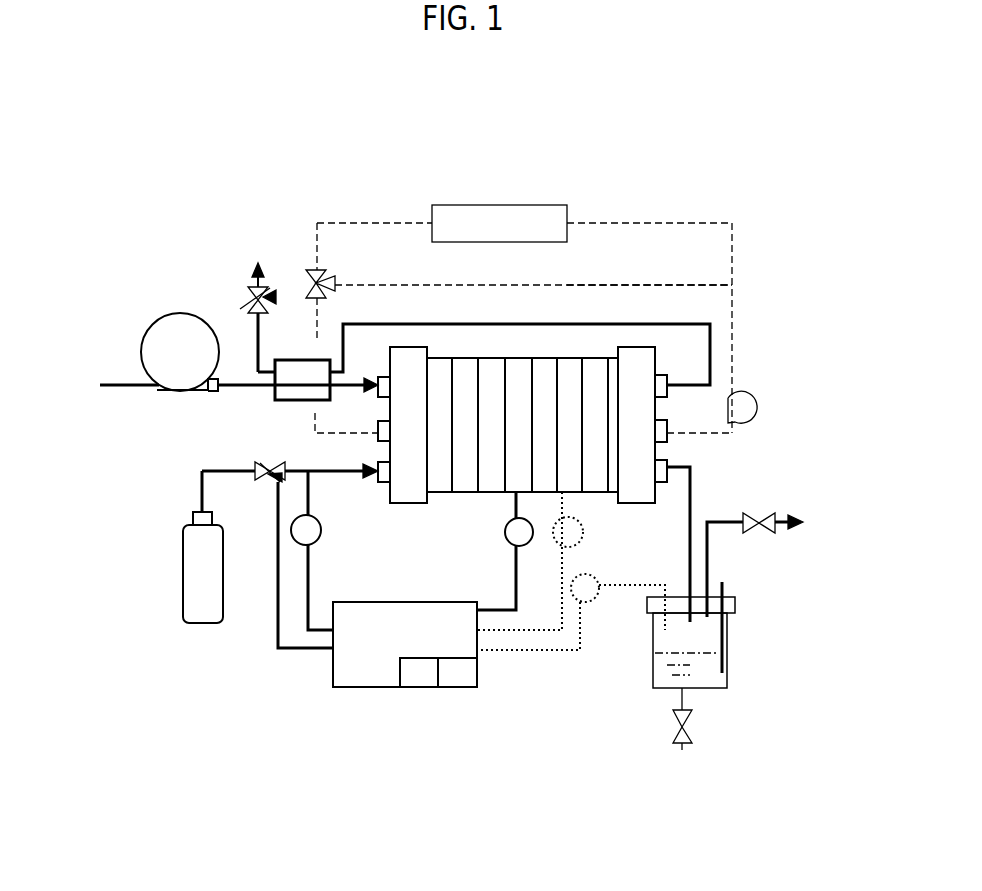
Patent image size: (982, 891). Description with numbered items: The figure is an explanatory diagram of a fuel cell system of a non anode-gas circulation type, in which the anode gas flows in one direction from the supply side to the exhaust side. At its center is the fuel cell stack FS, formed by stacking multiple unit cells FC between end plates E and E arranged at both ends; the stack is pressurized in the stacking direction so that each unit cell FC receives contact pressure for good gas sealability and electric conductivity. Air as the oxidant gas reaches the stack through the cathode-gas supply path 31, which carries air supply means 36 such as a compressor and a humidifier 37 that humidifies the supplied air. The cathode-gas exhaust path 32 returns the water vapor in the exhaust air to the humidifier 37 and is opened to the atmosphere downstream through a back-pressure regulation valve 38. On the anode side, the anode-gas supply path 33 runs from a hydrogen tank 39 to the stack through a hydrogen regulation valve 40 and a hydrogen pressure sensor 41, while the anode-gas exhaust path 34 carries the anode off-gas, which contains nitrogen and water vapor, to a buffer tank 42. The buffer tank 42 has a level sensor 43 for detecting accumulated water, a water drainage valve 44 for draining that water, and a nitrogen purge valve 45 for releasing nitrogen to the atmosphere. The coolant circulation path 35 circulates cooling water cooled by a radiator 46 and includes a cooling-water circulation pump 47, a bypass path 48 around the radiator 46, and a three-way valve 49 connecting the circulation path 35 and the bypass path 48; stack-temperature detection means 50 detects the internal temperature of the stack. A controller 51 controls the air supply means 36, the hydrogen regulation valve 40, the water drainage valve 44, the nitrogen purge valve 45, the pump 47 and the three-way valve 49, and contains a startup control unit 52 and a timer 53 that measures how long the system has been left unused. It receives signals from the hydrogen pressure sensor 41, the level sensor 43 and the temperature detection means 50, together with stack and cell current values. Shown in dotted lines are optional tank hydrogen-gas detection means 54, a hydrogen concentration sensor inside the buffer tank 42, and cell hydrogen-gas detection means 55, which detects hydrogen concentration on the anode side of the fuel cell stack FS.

The cathode-gas supply path 31 is at (112, 385).
The cathode-gas exhaust path 32 is at (707, 343).
The anode-gas supply path 33 is at (342, 467).
The anode-gas exhaust path 34 is at (688, 508).
The coolant circulation path 35 is at (375, 223).
The air supply means 36 is at (168, 365).
The humidifier 37 is at (275, 390).
The back-pressure regulation valve 38 is at (250, 298).
The hydrogen tank 39 is at (188, 605).
The hydrogen regulation valve 40 is at (258, 482).
The hydrogen pressure sensor 41 is at (298, 538).
The buffer tank 42 is at (652, 650).
The level sensor 43 is at (727, 662).
The water drainage valve 44 is at (675, 713).
The nitrogen purge valve 45 is at (753, 533).
The radiator 46 is at (512, 232).
The cooling-water circulation pump 47 is at (743, 423).
The bypass path 48 is at (613, 285).
The three-way valve 49 is at (316, 268).
The stack-temperature detection means 50 is at (512, 533).
The controller 51 is at (360, 652).
The startup control unit 52 is at (420, 677).
The timer 53 is at (457, 678).
The tank hydrogen-gas detection means 54 is at (593, 593).
The cell hydrogen-gas detection means 55 is at (560, 537).
The unit cell FC is at (570, 383).
The end plate E is at (395, 358).
The fuel cell stack FS is at (460, 472).